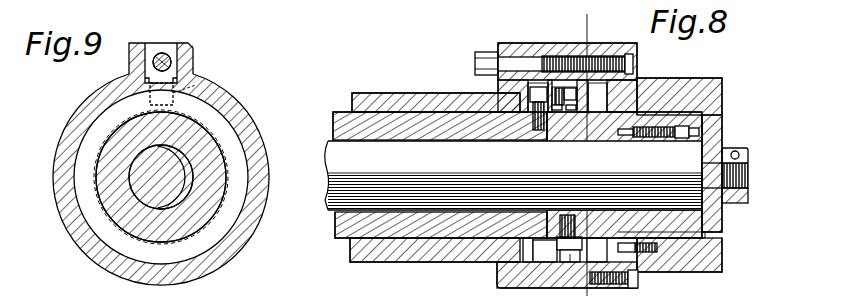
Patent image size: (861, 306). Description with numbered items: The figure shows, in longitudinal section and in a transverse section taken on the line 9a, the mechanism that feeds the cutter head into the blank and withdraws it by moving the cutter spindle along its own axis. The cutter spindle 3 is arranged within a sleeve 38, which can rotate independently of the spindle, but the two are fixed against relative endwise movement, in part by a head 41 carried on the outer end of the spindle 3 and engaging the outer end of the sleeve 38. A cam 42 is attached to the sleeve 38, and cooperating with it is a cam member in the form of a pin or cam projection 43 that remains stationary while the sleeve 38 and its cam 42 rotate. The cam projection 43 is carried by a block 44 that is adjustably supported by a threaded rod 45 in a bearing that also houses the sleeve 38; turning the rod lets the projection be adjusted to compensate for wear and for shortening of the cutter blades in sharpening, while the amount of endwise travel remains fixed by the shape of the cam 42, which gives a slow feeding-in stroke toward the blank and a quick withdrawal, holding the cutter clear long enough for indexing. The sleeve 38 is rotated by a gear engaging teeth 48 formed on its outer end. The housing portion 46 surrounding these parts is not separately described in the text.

In FIG. 9, the cutter spindle 3 is at (175, 178).
In FIG. 8, the cutter spindle 3 is at (536, 175).
In FIG. 9, the sleeve 38 is at (192, 208).
In FIG. 8, the sleeve 38 is at (417, 125).
In FIG. 8, the head 41 is at (718, 140).
In FIG. 9, the cam 42 is at (227, 130).
In FIG. 8, the cam 42 is at (527, 264).
In FIG. 9, the cam projection 43 is at (205, 82).
In FIG. 8, the cam projection 43 is at (566, 88).
In FIG. 9, the block 44 is at (172, 43).
In FIG. 8, the block 44 is at (597, 45).
In FIG. 9, the threaded rod 45 is at (190, 47).
In FIG. 8, the threaded rod 45 is at (523, 62).
In FIG. 8, the housing cover 46 is at (658, 100).
In FIG. 8, the teeth 48 is at (673, 118).
In FIG. 8, the section line 9a is at (588, 153).